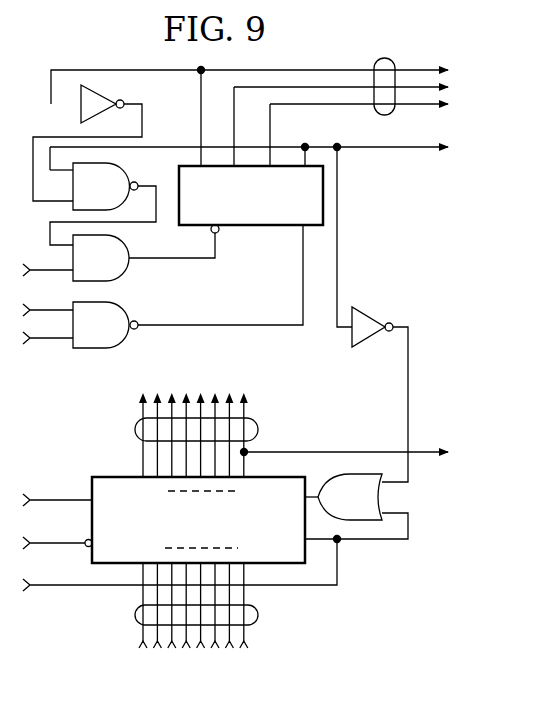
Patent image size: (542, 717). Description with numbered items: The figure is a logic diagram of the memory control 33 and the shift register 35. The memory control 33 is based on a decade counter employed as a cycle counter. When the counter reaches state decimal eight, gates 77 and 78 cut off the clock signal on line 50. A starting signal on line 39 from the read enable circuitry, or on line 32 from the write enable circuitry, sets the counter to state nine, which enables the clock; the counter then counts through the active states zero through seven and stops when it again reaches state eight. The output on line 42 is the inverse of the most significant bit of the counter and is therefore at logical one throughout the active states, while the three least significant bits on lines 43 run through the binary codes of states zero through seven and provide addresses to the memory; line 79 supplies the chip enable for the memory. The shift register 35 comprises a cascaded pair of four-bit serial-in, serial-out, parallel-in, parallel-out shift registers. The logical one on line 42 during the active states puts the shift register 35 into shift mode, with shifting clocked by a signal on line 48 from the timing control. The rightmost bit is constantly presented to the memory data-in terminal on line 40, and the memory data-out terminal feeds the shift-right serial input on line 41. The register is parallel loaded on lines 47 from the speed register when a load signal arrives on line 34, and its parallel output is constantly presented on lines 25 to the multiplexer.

The gate 77 is at (127, 170).
The gate 78 is at (130, 250).
The clock signal line 50 is at (50, 268).
The starting signal line 39 is at (57, 310).
The starting signal line 32 is at (55, 340).
The memory control 33 is at (270, 304).
The address lines 43 is at (387, 116).
The chip enable line 79 is at (380, 147).
The output line 42 is at (408, 361).
The data-in line 40 is at (338, 452).
The parallel output lines 25 is at (135, 427).
The shift register 35 is at (306, 422).
The serial data input line 41 is at (70, 500).
The shift clock line 48 is at (78, 543).
The load signal line 34 is at (80, 585).
The parallel load lines 47 is at (137, 620).